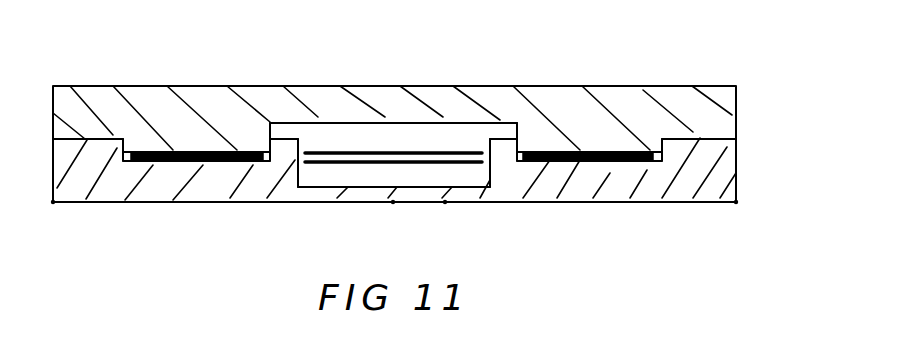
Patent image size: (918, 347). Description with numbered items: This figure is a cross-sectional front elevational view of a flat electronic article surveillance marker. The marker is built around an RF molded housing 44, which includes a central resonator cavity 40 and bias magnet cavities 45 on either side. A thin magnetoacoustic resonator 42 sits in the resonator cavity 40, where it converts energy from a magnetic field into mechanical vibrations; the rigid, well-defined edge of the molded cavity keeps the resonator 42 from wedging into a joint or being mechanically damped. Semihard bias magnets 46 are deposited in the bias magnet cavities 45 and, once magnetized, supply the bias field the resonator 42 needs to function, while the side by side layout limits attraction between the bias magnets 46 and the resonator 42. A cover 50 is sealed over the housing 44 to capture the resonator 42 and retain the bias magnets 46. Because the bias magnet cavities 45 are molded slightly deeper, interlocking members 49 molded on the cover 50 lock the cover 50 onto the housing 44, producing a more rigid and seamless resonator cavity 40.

The resonator cavity 40 is at (408, 175).
The resonator 42 is at (380, 158).
The housing 44 is at (743, 176).
The bias magnet cavity 45 is at (128, 152).
The bias magnet 46 is at (185, 161).
The interlocking member 49 is at (200, 147).
The cover 50 is at (703, 84).